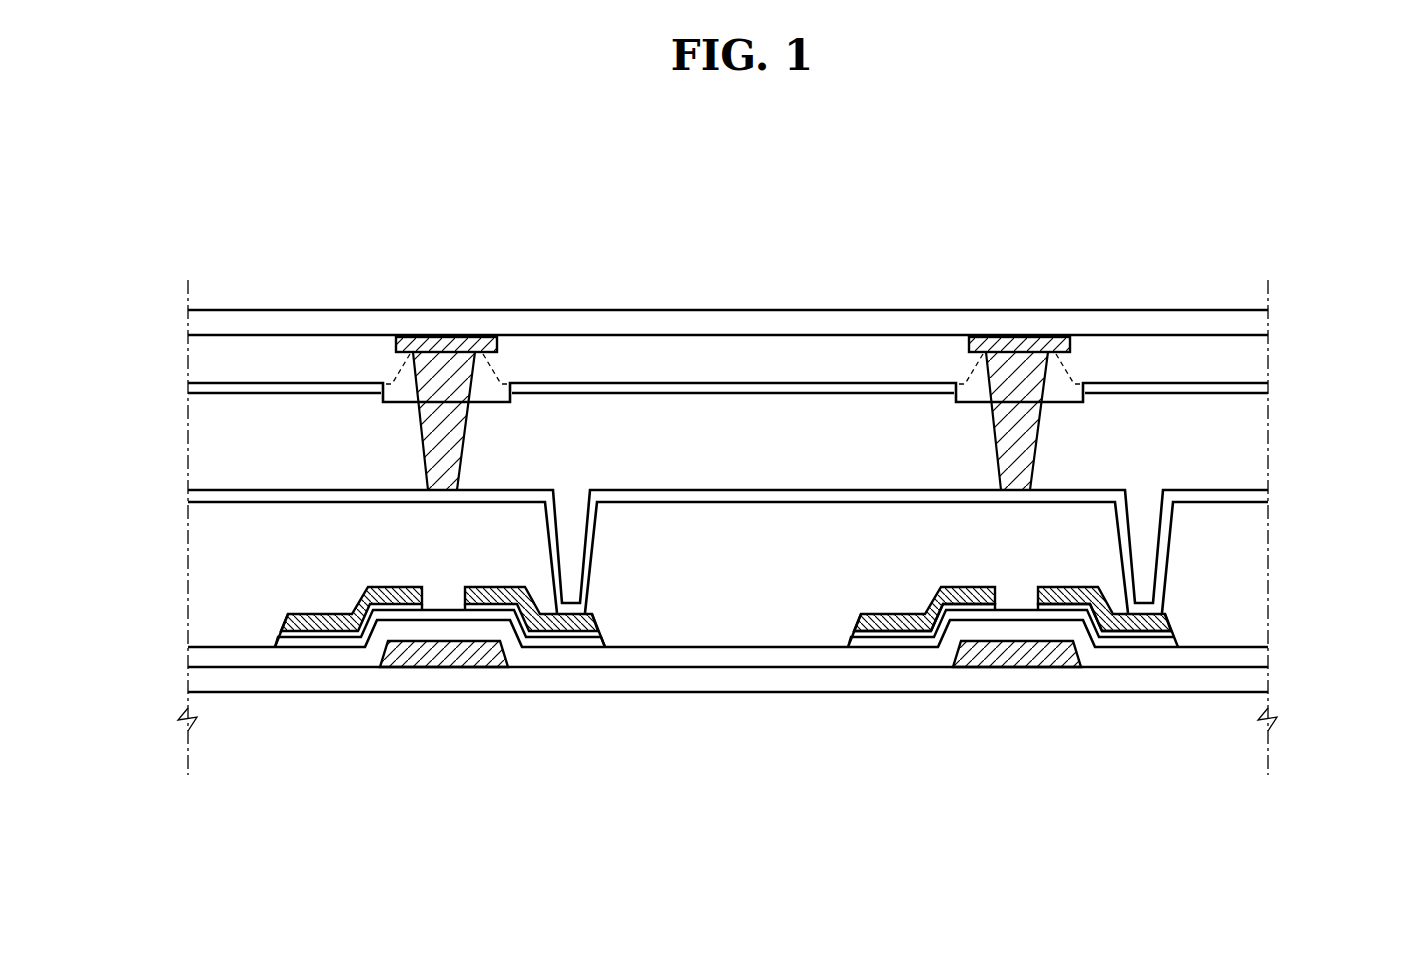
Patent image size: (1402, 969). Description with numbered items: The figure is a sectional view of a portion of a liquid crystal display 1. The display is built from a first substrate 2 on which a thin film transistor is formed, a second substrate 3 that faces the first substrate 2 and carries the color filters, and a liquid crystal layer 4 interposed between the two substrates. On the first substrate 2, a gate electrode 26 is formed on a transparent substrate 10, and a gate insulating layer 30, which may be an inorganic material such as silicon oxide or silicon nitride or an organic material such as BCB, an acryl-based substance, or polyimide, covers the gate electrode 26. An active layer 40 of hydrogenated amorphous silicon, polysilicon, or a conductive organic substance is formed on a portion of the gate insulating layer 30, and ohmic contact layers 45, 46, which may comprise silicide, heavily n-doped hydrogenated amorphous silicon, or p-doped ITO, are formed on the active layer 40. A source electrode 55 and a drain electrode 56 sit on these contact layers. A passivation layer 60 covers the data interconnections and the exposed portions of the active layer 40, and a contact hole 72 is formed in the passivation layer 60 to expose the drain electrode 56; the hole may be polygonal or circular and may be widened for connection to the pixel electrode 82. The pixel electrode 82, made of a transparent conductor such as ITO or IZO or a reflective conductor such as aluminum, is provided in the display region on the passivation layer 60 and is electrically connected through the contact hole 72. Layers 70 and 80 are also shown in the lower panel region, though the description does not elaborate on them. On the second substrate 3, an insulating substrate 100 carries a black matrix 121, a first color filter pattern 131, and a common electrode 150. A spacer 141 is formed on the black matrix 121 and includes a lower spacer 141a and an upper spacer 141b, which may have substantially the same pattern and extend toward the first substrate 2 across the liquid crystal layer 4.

The liquid crystal display 1 is at (183, 122).
The first substrate 2 is at (173, 490).
The second substrate 3 is at (178, 357).
The liquid crystal layer 4 is at (225, 435).
The transparent substrate 10 is at (1255, 680).
The gate electrode 26 is at (1005, 656).
The gate insulating layer 30 is at (926, 650).
The active layer 40 is at (1108, 648).
The ohmic contact layer 45 is at (890, 633).
The ohmic contact layer 46 is at (1137, 633).
The source electrode 55 is at (866, 634).
The drain electrode 56 is at (1150, 628).
The passivation layer 60 is at (1255, 557).
The organic layer 70 is at (725, 568).
The contact hole 72 is at (1134, 537).
The pixel electrode 80 is at (800, 495).
The pixel electrode 82 is at (1255, 497).
The insulating substrate 100 is at (1255, 330).
The black matrix 121 is at (437, 338).
The first color filter pattern 131 is at (285, 358).
The spacer 141 is at (485, 745).
The lower spacer 141a is at (437, 435).
The upper spacer 141b is at (460, 378).
The common electrode 150 is at (1255, 393).